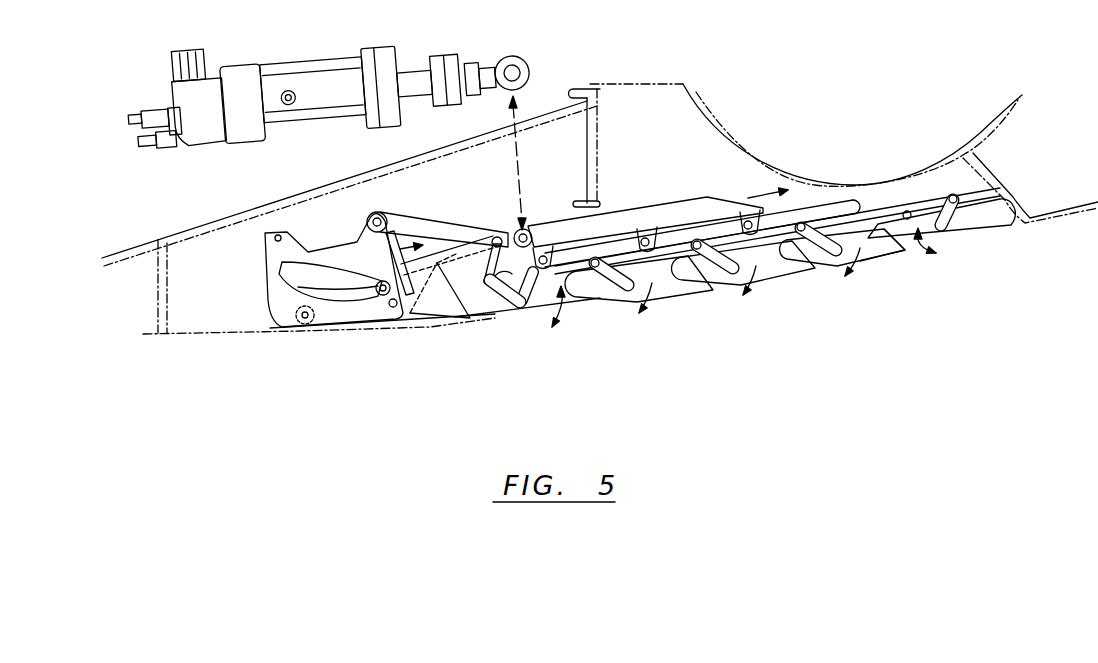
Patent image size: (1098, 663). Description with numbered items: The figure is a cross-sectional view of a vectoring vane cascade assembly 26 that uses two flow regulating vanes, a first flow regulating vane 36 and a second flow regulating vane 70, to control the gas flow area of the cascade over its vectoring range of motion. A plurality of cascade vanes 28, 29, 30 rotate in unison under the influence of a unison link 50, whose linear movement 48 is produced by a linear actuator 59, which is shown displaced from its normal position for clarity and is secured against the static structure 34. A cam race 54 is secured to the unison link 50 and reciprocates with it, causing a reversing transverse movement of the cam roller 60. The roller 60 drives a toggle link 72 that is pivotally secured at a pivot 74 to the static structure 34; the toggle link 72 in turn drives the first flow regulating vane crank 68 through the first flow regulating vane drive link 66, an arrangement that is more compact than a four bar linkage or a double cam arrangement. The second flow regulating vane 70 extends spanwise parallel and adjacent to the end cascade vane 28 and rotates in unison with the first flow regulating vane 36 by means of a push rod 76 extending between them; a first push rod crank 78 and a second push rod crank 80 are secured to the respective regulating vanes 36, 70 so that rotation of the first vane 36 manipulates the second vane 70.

The cascade assembly 26 is at (862, 361).
The cascade vane 28 is at (885, 256).
The cascade vane 29 is at (780, 275).
The cascade vane 30 is at (682, 290).
The static structure 34 is at (447, 318).
The first flow regulating vane 36 is at (593, 306).
The linear movement 48 is at (756, 196).
The unison link 50 is at (671, 205).
The cam race 54 is at (362, 311).
The linear actuator 59 is at (320, 61).
The cam roller 60 is at (382, 283).
The first flow regulating vane drive link 66 is at (518, 233).
The first flow regulating vane crank 68 is at (513, 310).
The second flow regulating vane 70 is at (967, 238).
The toggle link 72 is at (418, 290).
The pivot 74 is at (436, 262).
The push rod 76 is at (885, 218).
The first push rod crank 78 is at (538, 315).
The second push rod crank 80 is at (957, 208).